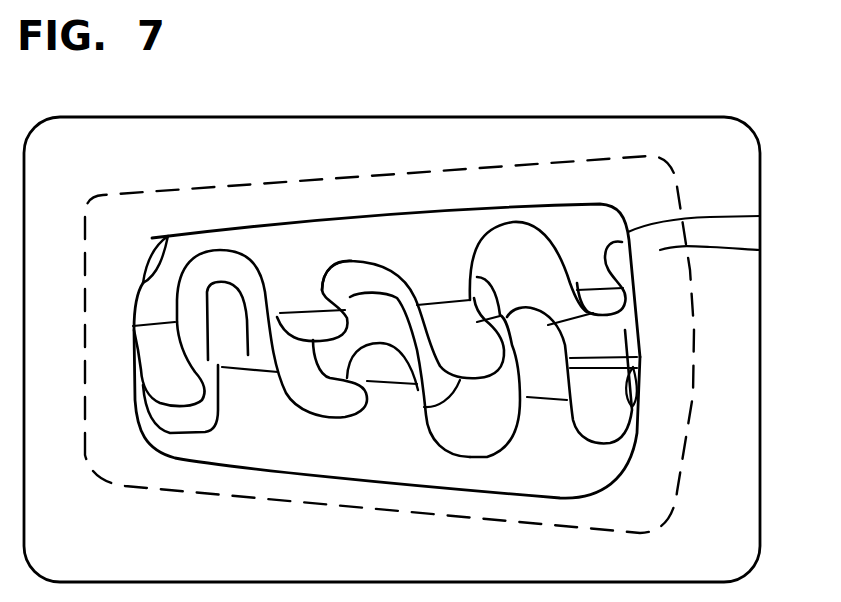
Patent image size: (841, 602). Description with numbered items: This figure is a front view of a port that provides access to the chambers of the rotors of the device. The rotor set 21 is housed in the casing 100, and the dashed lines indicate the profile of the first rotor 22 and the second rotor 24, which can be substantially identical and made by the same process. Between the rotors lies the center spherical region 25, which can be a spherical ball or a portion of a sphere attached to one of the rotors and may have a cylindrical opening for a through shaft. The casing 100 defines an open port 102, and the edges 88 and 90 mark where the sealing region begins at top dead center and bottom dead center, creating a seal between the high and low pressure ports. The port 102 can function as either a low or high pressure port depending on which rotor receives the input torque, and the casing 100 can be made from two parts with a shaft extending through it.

The casing 100 is at (519, 133).
The first rotor 22 is at (640, 492).
The edge 88 is at (760, 216).
The second rotor 24 is at (760, 250).
The rotor set 21 is at (386, 290).
The open port 102 is at (410, 228).
The edge 90 is at (168, 236).
The center spherical region 25 is at (383, 318).